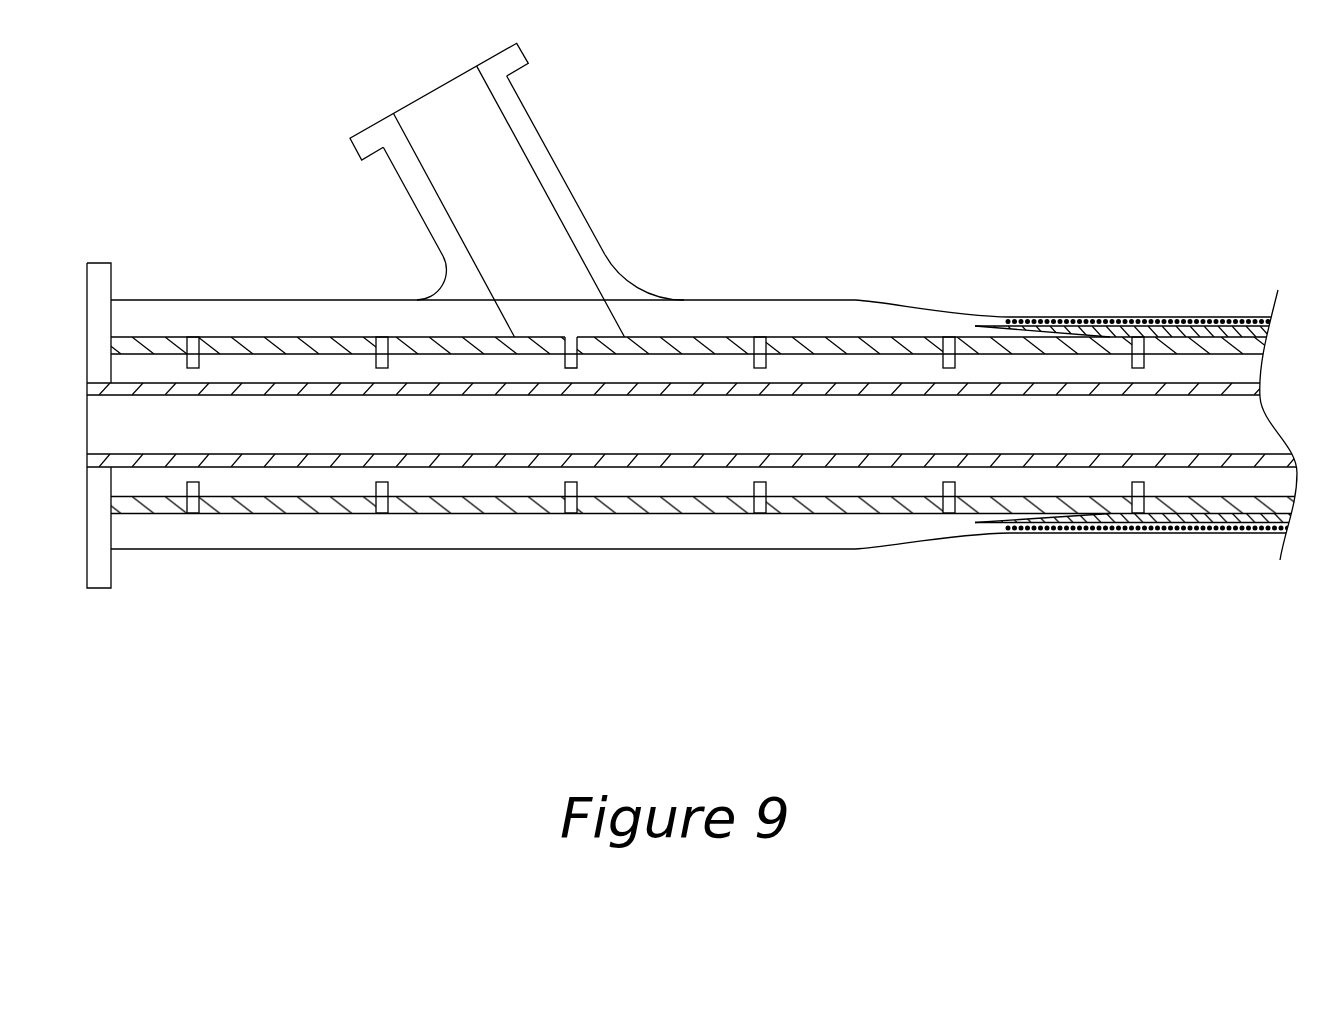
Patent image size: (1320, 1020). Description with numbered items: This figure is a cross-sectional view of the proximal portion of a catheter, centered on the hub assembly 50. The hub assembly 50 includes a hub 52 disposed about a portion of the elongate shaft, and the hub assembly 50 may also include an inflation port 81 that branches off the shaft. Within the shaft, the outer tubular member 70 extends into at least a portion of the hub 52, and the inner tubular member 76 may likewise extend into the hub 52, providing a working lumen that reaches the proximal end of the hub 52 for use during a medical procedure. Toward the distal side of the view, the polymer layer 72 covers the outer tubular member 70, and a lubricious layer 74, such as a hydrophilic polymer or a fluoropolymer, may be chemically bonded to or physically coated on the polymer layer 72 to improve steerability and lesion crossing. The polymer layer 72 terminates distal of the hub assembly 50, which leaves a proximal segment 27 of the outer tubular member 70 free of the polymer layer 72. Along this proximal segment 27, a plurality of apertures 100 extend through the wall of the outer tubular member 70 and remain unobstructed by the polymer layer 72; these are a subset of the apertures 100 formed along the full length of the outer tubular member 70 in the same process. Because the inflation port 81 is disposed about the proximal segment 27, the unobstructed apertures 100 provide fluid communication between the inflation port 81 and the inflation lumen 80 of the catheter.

The hub assembly 50 is at (875, 154).
The hub 52 is at (292, 549).
The inflation port 81 is at (490, 173).
The proximal segment 27 is at (600, 337).
The apertures 100 is at (568, 342).
The inflation lumen 80 is at (895, 368).
The outer tubular member 70 is at (912, 503).
The polymer layer 72 is at (1128, 511).
The lubricious layer 74 is at (1238, 523).
The inner tubular member 76 is at (1180, 383).